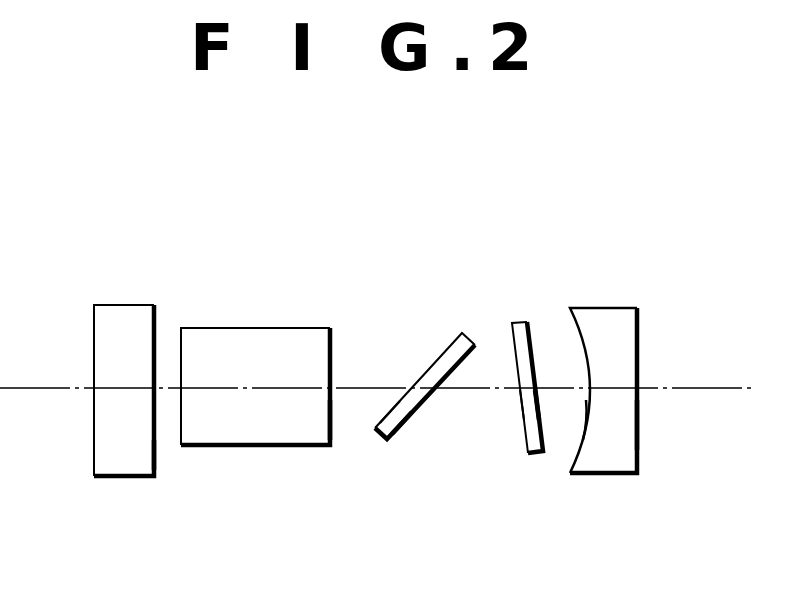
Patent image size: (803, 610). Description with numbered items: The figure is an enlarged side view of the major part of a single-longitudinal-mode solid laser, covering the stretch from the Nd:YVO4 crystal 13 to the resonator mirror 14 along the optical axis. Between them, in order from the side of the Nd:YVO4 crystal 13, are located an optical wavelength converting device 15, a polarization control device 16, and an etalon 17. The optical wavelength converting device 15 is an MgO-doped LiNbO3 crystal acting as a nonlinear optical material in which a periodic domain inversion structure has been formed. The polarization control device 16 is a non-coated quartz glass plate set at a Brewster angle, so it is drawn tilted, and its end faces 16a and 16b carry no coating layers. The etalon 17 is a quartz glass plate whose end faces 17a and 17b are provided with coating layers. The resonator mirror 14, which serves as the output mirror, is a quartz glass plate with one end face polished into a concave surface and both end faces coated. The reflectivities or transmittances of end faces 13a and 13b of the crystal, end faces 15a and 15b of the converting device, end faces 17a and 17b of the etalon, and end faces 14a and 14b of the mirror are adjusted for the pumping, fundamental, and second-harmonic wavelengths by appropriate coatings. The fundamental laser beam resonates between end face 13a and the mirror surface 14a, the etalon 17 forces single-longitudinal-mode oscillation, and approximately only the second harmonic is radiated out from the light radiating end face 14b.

The Nd:YVO4 crystal 13 is at (123, 292).
The end face of Nd:YVO4 crystal 13a is at (93, 447).
The end face of Nd:YVO4 crystal 13b is at (155, 457).
The optical wavelength converting device 15 is at (252, 320).
The end face of optical wavelength converting device 15a is at (182, 415).
The end face of optical wavelength converting device 15b is at (330, 415).
The polarization control device 16 is at (460, 325).
The end face of polarization control device 16a is at (393, 398).
The end face of polarization control device 16b is at (410, 410).
The etalon 17 is at (518, 315).
The end face of etalon 17a is at (517, 417).
The end face of etalon 17b is at (543, 420).
The resonator mirror 14 is at (607, 305).
The mirror surface of resonator mirror 14a is at (588, 413).
The light radiating end face of resonator mirror 14b is at (637, 432).